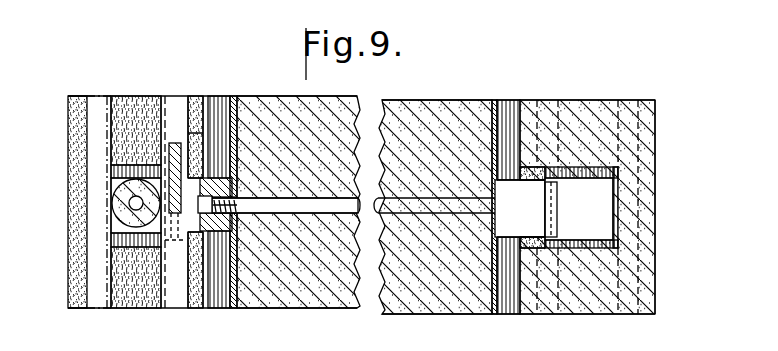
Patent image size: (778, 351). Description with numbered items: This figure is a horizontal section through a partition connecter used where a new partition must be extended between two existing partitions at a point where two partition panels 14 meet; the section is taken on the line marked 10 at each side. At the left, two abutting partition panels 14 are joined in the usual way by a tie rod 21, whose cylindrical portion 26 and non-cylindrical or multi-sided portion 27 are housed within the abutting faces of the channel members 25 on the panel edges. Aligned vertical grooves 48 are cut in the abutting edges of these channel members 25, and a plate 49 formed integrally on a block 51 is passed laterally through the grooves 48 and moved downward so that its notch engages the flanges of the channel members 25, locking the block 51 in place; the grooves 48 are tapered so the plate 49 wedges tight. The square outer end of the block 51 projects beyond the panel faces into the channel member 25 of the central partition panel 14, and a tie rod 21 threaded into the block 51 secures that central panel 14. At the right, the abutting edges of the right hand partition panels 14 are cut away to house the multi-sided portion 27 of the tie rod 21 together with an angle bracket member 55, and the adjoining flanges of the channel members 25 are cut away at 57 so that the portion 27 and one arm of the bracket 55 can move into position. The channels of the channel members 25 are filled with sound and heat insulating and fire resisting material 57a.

The section line 10 is at (362, 178).
The partition panel 14 is at (364, 218).
The tie rod 21 is at (398, 272).
The channel member 25 is at (373, 208).
The cylindrical portion 26 is at (290, 260).
The non-cylindrical or multi-sided portion 27 is at (329, 220).
The aligned vertical grooves 48 is at (179, 140).
The plate 49 is at (175, 238).
The block 51 is at (216, 256).
The angle bracket member 55 is at (581, 156).
The cut away of channel member flanges 57 is at (551, 258).
The sound and heat insulating and fire resisting material 57a is at (541, 157).